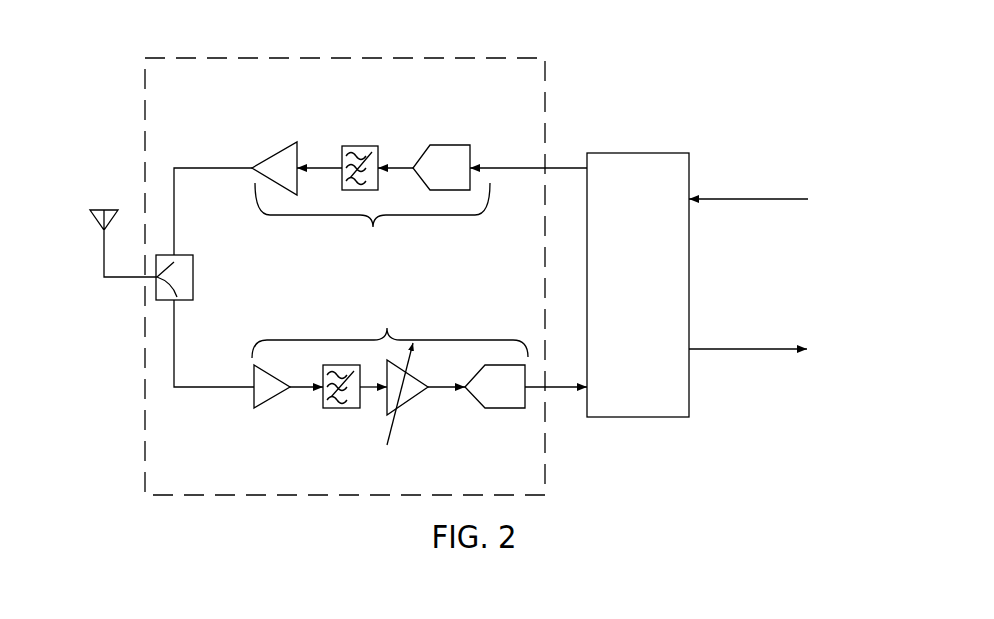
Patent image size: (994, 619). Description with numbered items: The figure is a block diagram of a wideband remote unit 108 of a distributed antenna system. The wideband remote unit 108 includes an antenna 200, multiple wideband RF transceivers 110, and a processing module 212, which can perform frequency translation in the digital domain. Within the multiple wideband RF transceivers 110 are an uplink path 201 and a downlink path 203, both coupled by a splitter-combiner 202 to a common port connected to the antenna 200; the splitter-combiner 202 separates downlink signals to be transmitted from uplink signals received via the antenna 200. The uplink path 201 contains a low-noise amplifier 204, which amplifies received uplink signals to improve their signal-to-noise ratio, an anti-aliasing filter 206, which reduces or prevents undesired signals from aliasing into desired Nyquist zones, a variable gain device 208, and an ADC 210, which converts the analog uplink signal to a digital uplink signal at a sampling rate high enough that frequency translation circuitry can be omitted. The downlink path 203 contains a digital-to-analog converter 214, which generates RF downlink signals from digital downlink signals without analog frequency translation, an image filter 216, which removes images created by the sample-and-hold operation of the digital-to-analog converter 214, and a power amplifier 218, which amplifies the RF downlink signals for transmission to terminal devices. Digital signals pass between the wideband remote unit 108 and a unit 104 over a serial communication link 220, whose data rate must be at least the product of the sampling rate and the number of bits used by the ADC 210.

The wideband remote unit 108 is at (137, 38).
The multiple wideband RF transceivers 110 is at (345, 276).
The unit 104 is at (782, 273).
The antenna 200 is at (96, 205).
The uplink path 201 is at (390, 330).
The splitter-combiner 202 is at (181, 254).
The downlink path 203 is at (372, 221).
The low-noise amplifier 204 is at (257, 421).
The anti-aliasing filter 206 is at (338, 421).
The variable gain device 208 is at (412, 420).
The ADC 210 is at (508, 418).
The processing module 212 is at (638, 285).
The digital-to-analog converter 214 is at (463, 128).
The image filter 216 is at (367, 128).
The power amplifier 218 is at (277, 127).
The communication link 220 is at (762, 338).